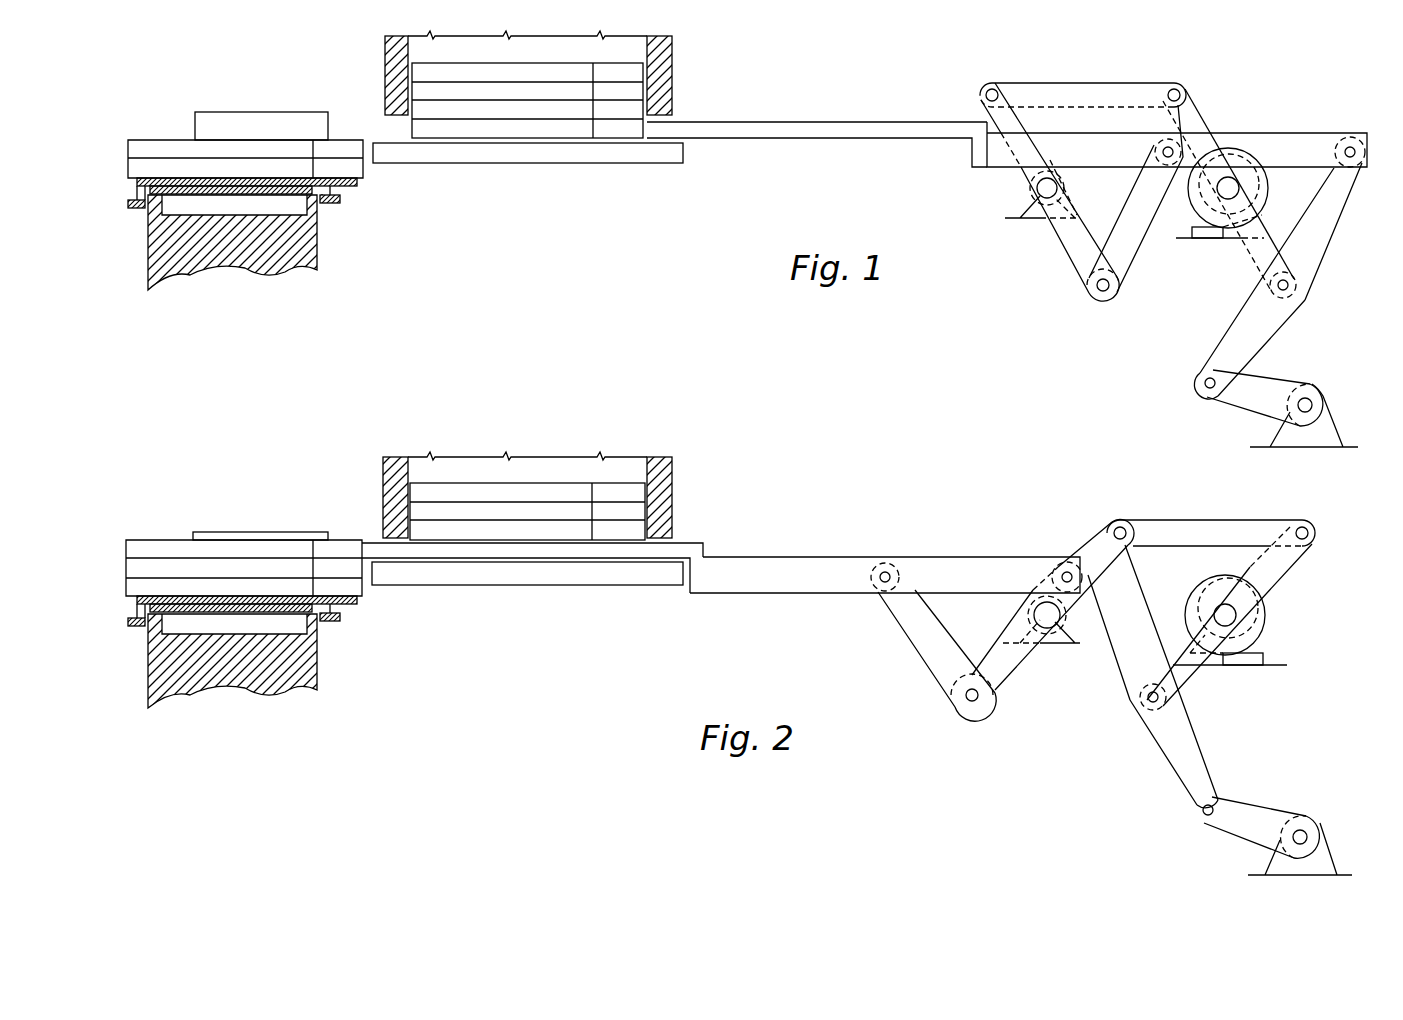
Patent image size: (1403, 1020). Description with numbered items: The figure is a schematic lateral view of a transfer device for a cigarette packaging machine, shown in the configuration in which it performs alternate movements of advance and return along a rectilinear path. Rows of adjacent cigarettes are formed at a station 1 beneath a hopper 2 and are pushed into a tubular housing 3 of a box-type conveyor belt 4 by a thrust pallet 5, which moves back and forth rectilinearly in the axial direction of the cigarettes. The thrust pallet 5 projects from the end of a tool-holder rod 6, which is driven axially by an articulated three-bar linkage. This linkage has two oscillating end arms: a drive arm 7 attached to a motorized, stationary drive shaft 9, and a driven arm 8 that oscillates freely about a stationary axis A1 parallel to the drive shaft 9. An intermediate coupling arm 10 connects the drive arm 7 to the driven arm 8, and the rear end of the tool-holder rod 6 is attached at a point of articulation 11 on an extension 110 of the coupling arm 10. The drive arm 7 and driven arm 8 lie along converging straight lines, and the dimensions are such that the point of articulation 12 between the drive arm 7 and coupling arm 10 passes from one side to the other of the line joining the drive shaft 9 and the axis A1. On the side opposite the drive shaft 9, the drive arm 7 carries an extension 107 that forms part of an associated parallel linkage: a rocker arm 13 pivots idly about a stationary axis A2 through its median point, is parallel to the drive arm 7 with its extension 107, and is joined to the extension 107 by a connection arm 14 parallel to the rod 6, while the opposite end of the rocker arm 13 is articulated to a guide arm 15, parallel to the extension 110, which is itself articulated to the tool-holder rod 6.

In FIG. 1, the station for forming the rows 1 is at (628, 172).
In FIG. 2, the station for forming the rows 1 is at (462, 597).
In FIG. 1, the hopper 2 is at (675, 50).
In FIG. 2, the hopper 2 is at (672, 470).
In FIG. 1, the tubular housing 3 is at (262, 112).
In FIG. 2, the tubular housing 3 is at (264, 532).
In FIG. 1, the box-type conveyor belt 4 is at (132, 212).
In FIG. 2, the box-type conveyor belt 4 is at (132, 646).
In FIG. 1, the thrust pallet 5 is at (785, 122).
In FIG. 2, the thrust pallet 5 is at (602, 552).
In FIG. 1, the tool-holder rod 6 is at (1100, 157).
In FIG. 2, the tool-holder rod 6 is at (783, 560).
In FIG. 1, the drive arm 7 is at (1240, 246).
In FIG. 2, the drive arm 7 is at (1175, 650).
In FIG. 1, the driven arm 8 is at (1276, 385).
In FIG. 2, the driven arm 8 is at (1262, 813).
In FIG. 1, the drive shaft 9 is at (1234, 186).
In FIG. 2, the drive shaft 9 is at (1232, 614).
In FIG. 1, the intermediate coupling arm 10 is at (1215, 342).
In FIG. 2, the intermediate coupling arm 10 is at (1178, 778).
In FIG. 1, the point of articulation 11 is at (1350, 140).
In FIG. 2, the point of articulation 11 is at (1067, 570).
In FIG. 1, the point of articulation 12 is at (1292, 285).
In FIG. 2, the point of articulation 12 is at (1162, 697).
In FIG. 1, the rocker arm 13 is at (1010, 182).
In FIG. 2, the rocker arm 13 is at (1106, 579).
In FIG. 1, the connection arm 14 is at (1086, 83).
In FIG. 2, the connection arm 14 is at (1222, 520).
In FIG. 1, the guide arm 15 is at (1128, 252).
In FIG. 2, the guide arm 15 is at (918, 652).
In FIG. 1, the extension of the drive arm 107 is at (1200, 106).
In FIG. 2, the extension of the drive arm 107 is at (1298, 554).
In FIG. 1, the extension of the intermediate coupling arm 110 is at (1344, 211).
In FIG. 2, the extension of the intermediate coupling arm 110 is at (1115, 655).
In FIG. 1, the stationary axis A1 is at (1310, 403).
In FIG. 2, the stationary axis A1 is at (1302, 836).
In FIG. 1, the stationary axis A2 is at (1040, 198).
In FIG. 2, the stationary axis A2 is at (1047, 630).